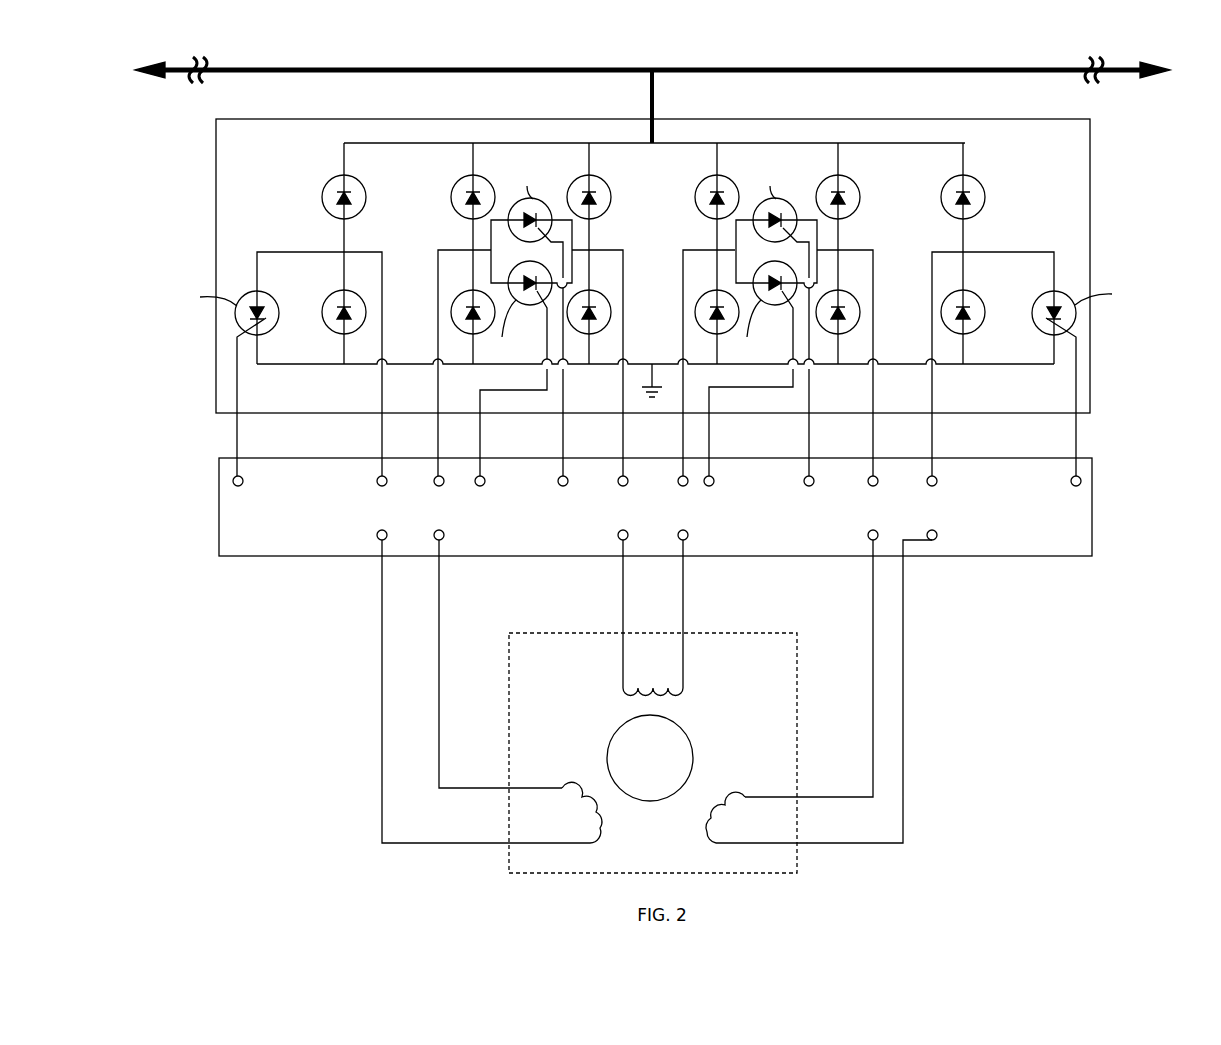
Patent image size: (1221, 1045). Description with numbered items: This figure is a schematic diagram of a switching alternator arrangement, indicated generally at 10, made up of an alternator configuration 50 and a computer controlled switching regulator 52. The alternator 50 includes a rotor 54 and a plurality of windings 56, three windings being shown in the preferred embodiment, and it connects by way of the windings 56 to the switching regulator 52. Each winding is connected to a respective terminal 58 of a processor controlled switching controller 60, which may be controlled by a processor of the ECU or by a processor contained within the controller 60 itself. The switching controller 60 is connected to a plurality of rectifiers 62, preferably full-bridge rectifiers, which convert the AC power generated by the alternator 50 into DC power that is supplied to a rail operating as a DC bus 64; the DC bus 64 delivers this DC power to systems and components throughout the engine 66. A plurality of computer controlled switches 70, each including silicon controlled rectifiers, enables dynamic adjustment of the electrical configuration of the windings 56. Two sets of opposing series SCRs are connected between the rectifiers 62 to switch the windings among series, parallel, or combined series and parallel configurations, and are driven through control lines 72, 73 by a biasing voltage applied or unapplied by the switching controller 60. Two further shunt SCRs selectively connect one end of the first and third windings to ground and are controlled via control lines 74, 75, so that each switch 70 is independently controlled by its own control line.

The electrical system 10 is at (1164, 768).
The alternator configuration 50 is at (798, 648).
The computer controlled switching regulator 52 is at (170, 513).
The rotor 54 is at (660, 800).
The windings 56 is at (578, 782).
The terminal 58 is at (240, 486).
The processor controlled switching controller 60 is at (1094, 507).
The rectifiers 62 is at (310, 158).
The DC bus 64 is at (918, 73).
The engine 66 is at (183, 85).
The computer controlled switches 70 is at (218, 331).
The control line 72 is at (563, 445).
The control line 73 is at (482, 400).
The control line 74 is at (237, 436).
The control line 75 is at (1078, 433).